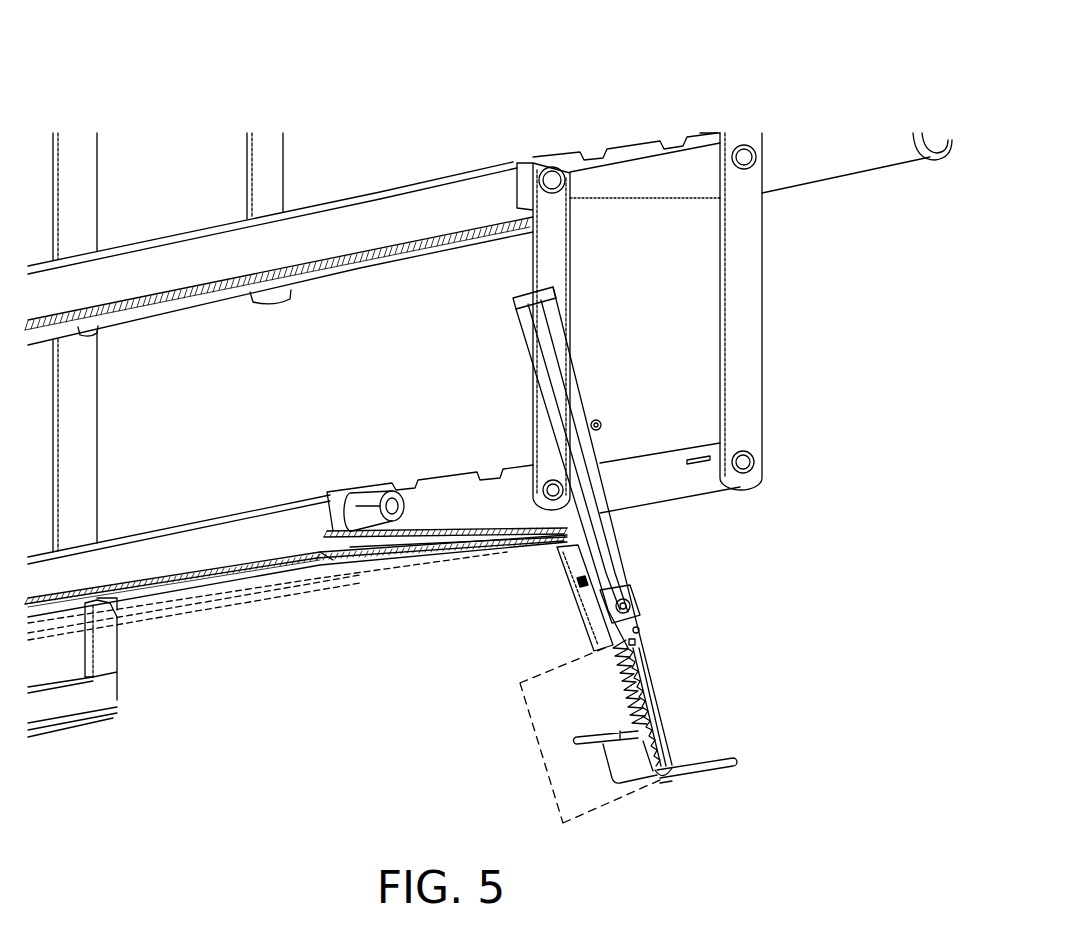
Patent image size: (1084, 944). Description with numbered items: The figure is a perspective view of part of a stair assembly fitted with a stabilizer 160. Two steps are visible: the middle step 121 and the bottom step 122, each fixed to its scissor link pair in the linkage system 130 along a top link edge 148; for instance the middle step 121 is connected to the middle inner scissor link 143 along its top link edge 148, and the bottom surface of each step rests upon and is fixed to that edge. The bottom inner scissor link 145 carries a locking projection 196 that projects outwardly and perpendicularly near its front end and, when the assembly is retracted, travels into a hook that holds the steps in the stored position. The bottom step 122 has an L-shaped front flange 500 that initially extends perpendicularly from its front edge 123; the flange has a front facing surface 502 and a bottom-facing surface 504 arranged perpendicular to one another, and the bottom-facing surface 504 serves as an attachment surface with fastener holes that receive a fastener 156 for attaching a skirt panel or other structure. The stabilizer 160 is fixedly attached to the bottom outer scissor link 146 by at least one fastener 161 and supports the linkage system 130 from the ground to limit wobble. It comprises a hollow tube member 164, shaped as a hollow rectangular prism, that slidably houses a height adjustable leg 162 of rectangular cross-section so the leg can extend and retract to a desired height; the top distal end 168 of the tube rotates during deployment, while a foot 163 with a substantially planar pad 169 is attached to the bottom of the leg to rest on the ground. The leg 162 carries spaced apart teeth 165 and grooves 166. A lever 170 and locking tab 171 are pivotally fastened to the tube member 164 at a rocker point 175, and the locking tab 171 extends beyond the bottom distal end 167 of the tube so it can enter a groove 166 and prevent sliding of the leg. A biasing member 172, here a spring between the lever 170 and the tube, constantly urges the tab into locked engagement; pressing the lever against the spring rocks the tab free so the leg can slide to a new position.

The middle step 121 is at (483, 151).
The bottom step 122 is at (182, 510).
The front edge 123 is at (257, 507).
The linkage system 130 is at (783, 206).
The middle inner scissor link 143 is at (123, 327).
The bottom inner scissor link 145 is at (473, 503).
The bottom outer scissor link 146 is at (550, 250).
The top link edge 148 is at (647, 152).
The fastener 156 is at (110, 612).
The stabilizer 160 is at (630, 527).
The fastener 161 is at (602, 426).
The adjustable leg 162 is at (652, 680).
The foot 163 is at (672, 793).
The hollow tube member 164 is at (597, 480).
The teeth 165 is at (615, 668).
The grooves 166 is at (648, 712).
The bottom distal end 167 is at (639, 630).
The top distal end 168 is at (531, 303).
The planar pad 169 is at (683, 773).
The lever 170 is at (567, 561).
The locking tab 171 is at (636, 642).
The biasing member 172 is at (590, 580).
The rocker point 175 is at (616, 608).
The locking projection 196 is at (380, 503).
The L-shaped front flange 500 is at (296, 577).
The front facing surface 502 is at (323, 539).
The bottom-facing surface 504 is at (213, 290).